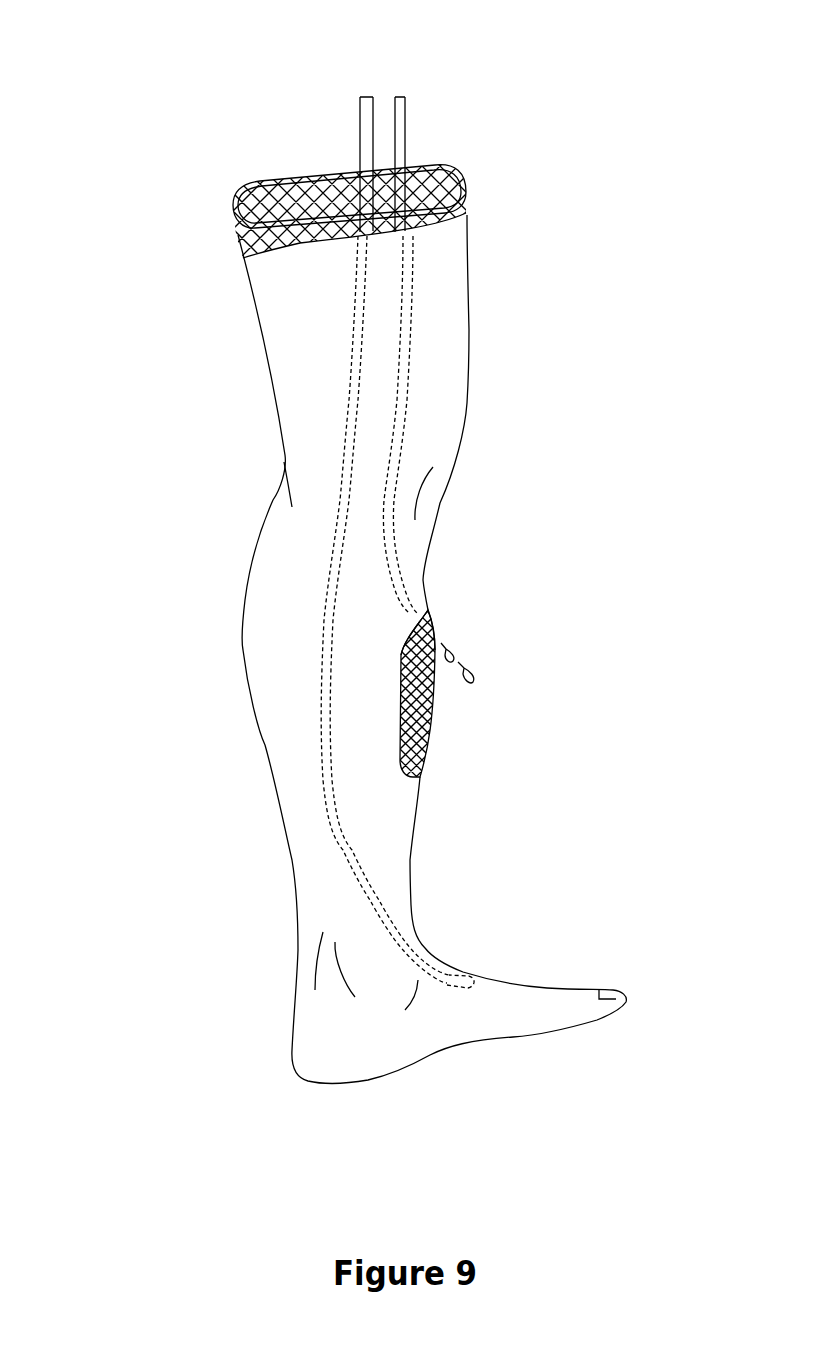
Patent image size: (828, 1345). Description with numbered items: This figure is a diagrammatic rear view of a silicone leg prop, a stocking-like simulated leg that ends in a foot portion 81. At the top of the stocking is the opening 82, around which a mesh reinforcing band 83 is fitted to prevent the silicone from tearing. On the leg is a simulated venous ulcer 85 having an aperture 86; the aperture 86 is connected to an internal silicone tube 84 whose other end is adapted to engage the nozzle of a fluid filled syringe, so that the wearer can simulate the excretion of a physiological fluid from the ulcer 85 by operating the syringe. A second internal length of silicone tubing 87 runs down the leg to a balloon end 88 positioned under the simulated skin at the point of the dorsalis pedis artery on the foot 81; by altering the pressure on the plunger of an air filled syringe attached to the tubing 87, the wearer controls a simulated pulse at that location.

The foot portion 81 is at (523, 1017).
The opening 82 is at (433, 187).
The mesh reinforcing band 83 is at (467, 207).
The internal silicone tube 84 is at (403, 97).
The simulated venous ulcer 85 is at (433, 703).
The aperture 86 is at (433, 630).
The internal length of silicone tubing 87 is at (363, 97).
The balloon end 88 is at (473, 977).